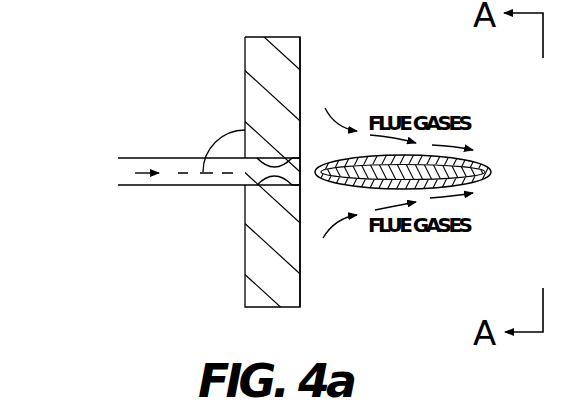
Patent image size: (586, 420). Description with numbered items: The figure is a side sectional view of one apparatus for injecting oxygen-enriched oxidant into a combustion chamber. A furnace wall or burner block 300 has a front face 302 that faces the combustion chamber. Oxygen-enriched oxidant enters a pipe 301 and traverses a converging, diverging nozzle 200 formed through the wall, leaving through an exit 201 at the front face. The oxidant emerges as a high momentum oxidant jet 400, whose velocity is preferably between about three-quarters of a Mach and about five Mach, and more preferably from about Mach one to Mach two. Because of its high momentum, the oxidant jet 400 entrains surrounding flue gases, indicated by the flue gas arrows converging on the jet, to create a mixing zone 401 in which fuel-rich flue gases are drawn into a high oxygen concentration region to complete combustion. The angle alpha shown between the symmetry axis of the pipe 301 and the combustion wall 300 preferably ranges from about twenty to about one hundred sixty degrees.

The furnace wall or burner block 300 is at (265, 53).
The pipe 301 is at (126, 157).
The front face 302 is at (301, 42).
The converging, diverging nozzle 200 is at (283, 178).
The exit 201 is at (302, 176).
The oxidant jet 400 is at (482, 181).
The mixing zone 401 is at (480, 166).